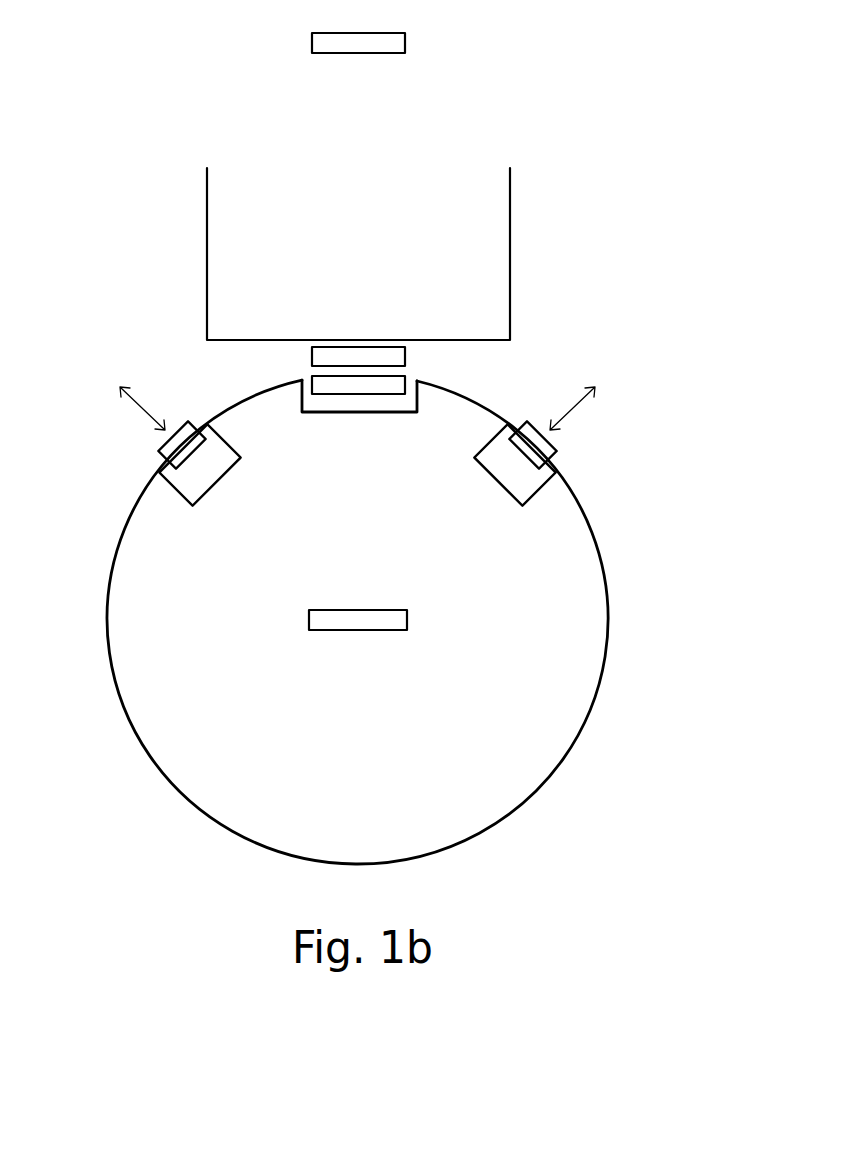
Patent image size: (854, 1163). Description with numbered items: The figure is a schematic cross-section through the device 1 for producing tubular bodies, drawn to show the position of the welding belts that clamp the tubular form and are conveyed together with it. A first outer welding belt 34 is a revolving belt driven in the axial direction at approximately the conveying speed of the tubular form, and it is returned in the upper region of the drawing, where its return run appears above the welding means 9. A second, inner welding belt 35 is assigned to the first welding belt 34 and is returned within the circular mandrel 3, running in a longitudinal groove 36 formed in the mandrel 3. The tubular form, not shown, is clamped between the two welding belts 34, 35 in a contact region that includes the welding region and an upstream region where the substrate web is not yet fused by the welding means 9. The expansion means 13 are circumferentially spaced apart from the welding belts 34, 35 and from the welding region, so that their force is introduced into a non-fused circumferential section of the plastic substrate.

The device 1 is at (632, 338).
The mandrel 3 is at (608, 606).
The welding means 9 is at (497, 190).
The expansion means 13 is at (173, 442).
The first outer welding belt 34 is at (392, 42).
The second inner welding belt 35 is at (316, 388).
The longitudinal groove 36 is at (388, 412).